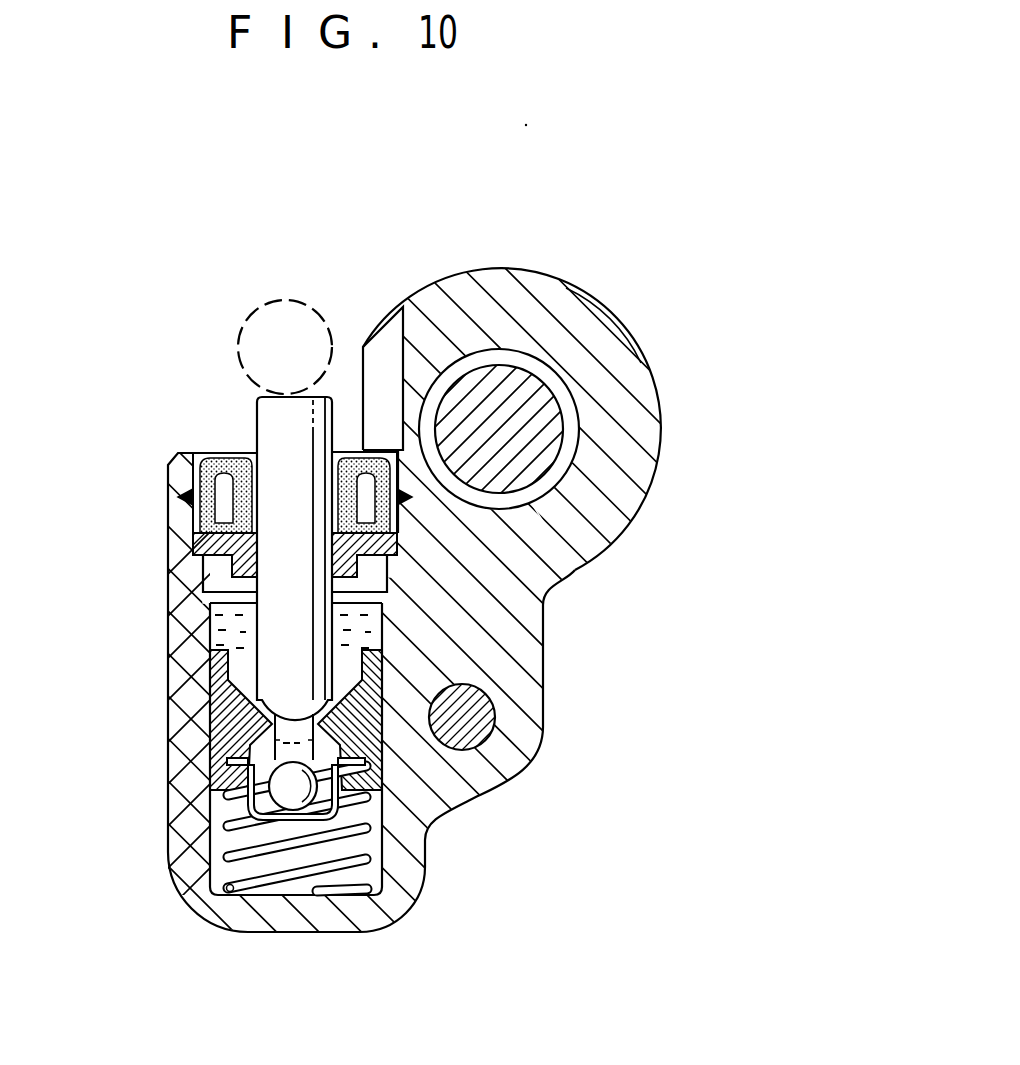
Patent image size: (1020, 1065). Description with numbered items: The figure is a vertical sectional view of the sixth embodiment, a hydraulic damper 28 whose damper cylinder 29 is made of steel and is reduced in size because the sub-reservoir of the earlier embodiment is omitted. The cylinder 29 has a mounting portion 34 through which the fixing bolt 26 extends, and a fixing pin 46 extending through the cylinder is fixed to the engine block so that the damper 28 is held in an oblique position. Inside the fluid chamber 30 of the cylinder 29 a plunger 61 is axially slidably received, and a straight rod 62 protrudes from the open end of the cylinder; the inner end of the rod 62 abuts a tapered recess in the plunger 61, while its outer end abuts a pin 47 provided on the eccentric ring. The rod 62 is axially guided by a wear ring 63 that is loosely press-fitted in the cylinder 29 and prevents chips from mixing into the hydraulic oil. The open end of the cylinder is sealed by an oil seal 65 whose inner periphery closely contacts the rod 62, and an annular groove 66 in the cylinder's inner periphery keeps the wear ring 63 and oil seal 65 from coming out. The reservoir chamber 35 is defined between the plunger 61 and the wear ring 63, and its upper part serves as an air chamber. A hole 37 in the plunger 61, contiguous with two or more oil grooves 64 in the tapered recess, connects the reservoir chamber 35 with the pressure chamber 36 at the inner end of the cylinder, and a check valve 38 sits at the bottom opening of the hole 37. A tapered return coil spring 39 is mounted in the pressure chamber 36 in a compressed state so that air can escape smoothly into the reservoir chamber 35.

The fixing bolt 26 is at (535, 422).
The hydraulic damper 28 is at (548, 640).
The damper cylinder 29 is at (190, 888).
The fluid chamber 30 is at (425, 838).
The mounting portion 34 is at (530, 315).
The reservoir chamber 35 is at (213, 627).
The pressure chamber 36 is at (302, 855).
The hole 37 is at (273, 785).
The check valve 38 is at (247, 810).
The return coil spring 39 is at (240, 885).
The fixing pin 46 is at (470, 713).
The pin 47 is at (262, 335).
The plunger 61 is at (380, 740).
The rod 62 is at (265, 422).
The wear ring 63 is at (207, 542).
The oil grooves 64 is at (250, 700).
The oil seal 65 is at (220, 452).
The annular groove 66 is at (190, 500).